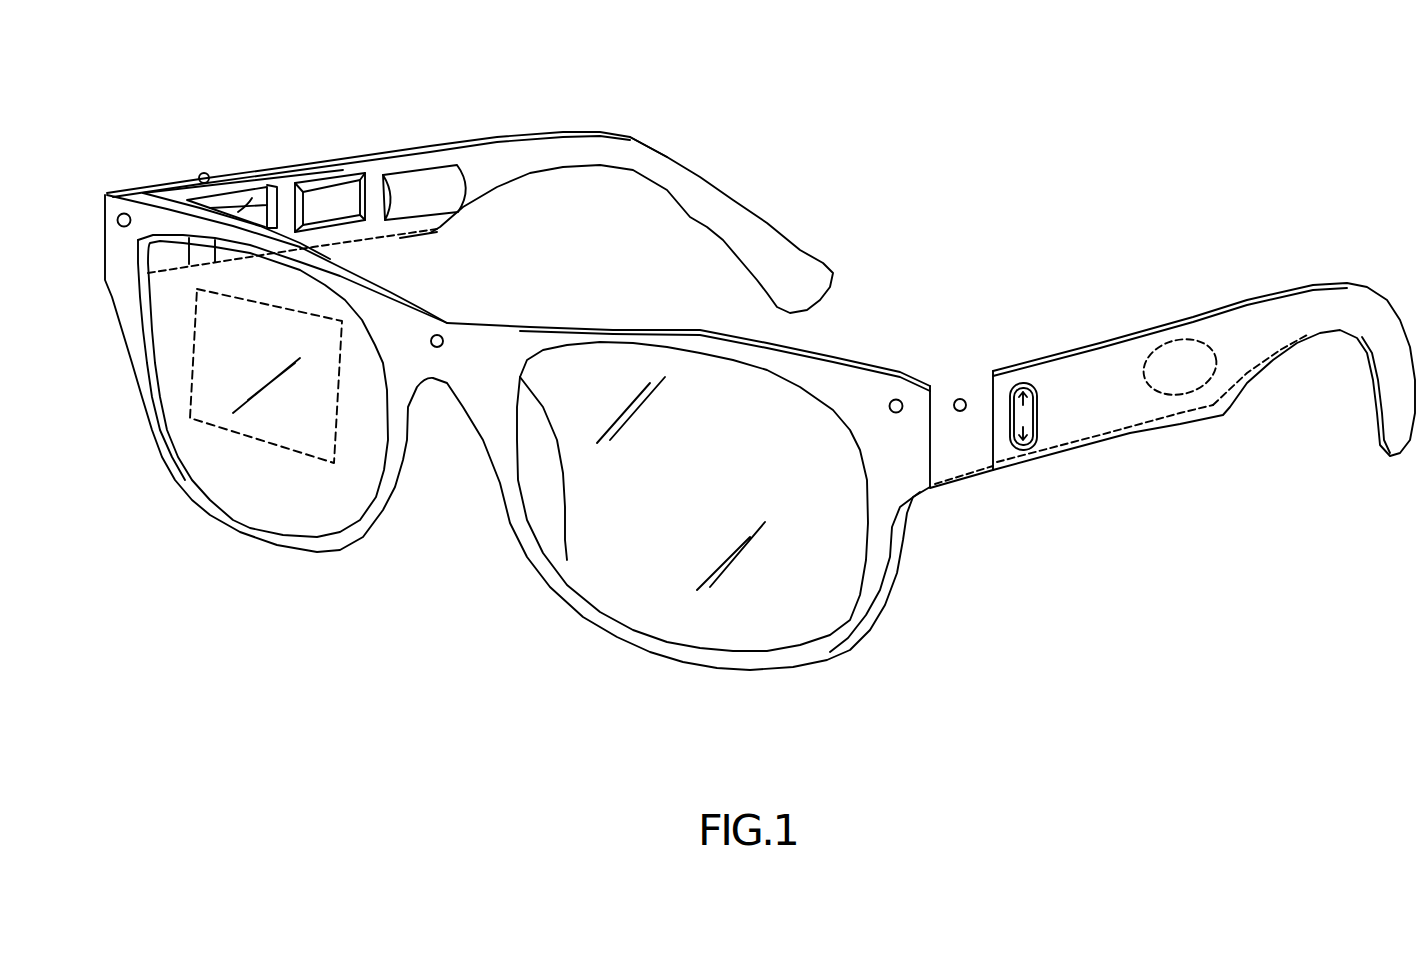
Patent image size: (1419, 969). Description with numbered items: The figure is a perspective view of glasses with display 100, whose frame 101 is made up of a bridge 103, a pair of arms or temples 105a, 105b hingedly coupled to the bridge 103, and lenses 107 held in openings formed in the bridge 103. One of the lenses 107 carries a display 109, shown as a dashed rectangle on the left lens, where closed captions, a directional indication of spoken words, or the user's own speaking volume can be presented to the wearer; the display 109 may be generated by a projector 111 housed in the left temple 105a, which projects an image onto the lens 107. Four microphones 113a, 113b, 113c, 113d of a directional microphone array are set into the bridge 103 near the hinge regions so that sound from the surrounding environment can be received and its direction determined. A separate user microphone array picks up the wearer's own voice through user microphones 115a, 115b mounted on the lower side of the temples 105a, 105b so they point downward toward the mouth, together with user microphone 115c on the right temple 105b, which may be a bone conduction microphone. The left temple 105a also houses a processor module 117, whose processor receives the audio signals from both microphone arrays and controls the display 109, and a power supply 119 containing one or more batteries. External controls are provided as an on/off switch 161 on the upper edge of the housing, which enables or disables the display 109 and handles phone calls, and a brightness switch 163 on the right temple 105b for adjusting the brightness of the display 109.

The glasses with display 100 is at (1012, 187).
The frame 101 is at (880, 368).
The bridge 103 is at (530, 327).
The temple 105a is at (507, 133).
The temple 105b is at (1100, 333).
The lenses 107 is at (340, 510).
The display 109 is at (270, 447).
The projector 111 is at (247, 207).
The microphone 113a is at (122, 213).
The microphone 113b is at (440, 334).
The microphone 113c is at (897, 399).
The microphone 113d is at (962, 412).
The user microphone 115a is at (173, 263).
The user microphone 115b is at (1023, 463).
The user microphone 115c is at (1192, 386).
The processor module 117 is at (332, 183).
The power supply 119 is at (415, 167).
The on/off switch 161 is at (205, 173).
The brightness switch 163 is at (1040, 413).